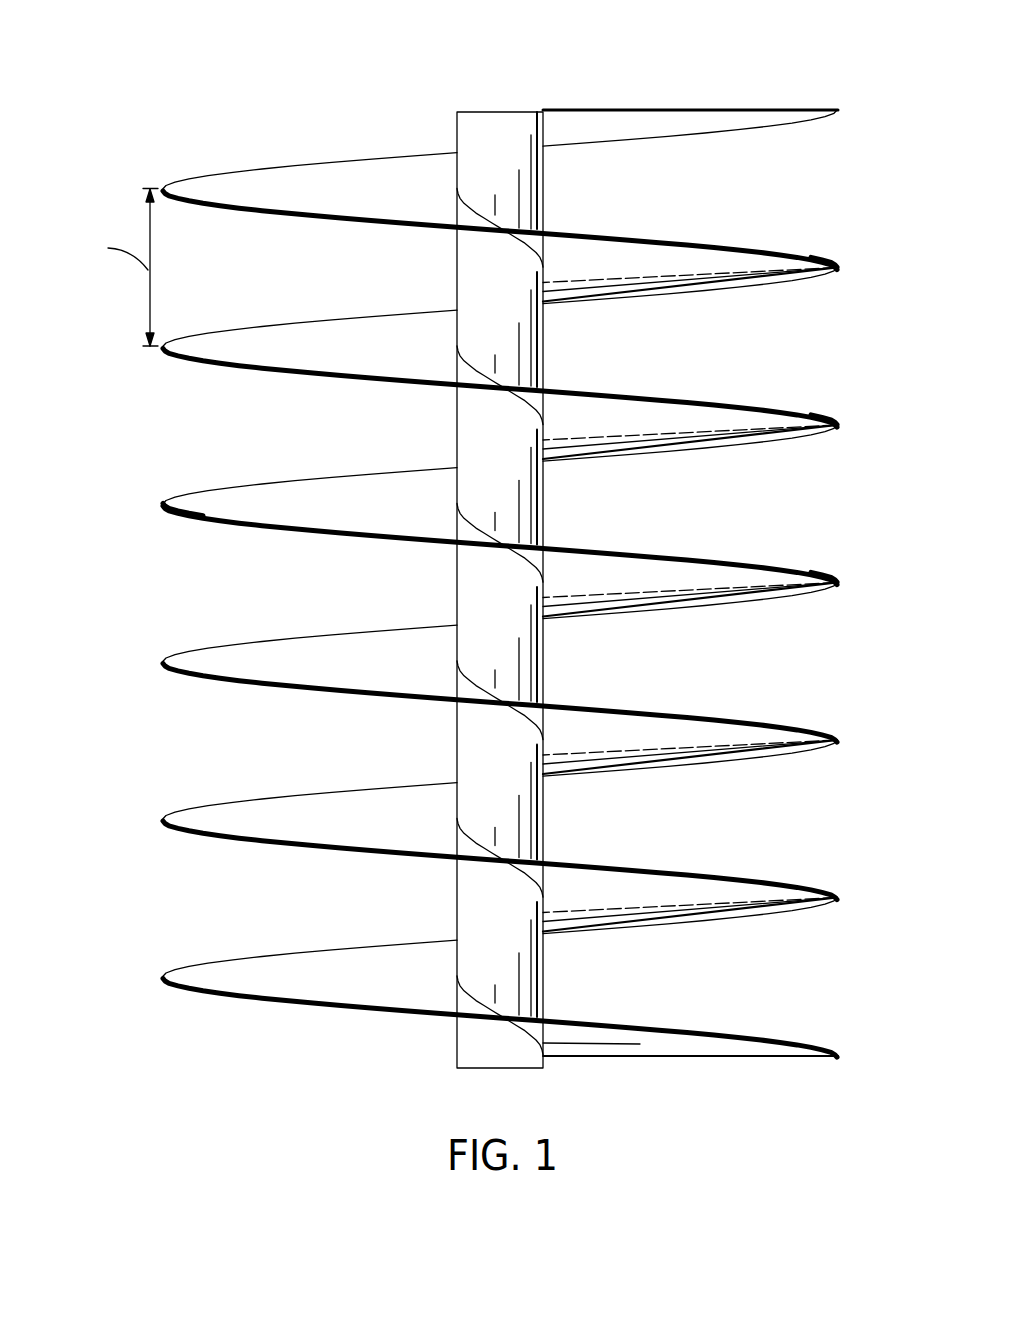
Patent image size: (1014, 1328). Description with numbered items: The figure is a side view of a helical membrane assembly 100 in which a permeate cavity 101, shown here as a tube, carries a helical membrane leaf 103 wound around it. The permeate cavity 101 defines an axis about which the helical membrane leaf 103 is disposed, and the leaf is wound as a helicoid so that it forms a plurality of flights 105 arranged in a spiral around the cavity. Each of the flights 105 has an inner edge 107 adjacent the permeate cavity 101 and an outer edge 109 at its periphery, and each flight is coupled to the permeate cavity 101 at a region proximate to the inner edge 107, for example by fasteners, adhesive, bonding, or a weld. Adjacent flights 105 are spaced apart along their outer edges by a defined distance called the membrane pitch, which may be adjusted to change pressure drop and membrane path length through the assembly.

The helical membrane assembly 100 is at (227, 44).
The permeate cavity 101 is at (512, 131).
The helical membrane leaf 103 is at (698, 262).
The flights 105 is at (786, 270).
The inner edge 107 is at (458, 519).
The outer edge 109 is at (162, 504).